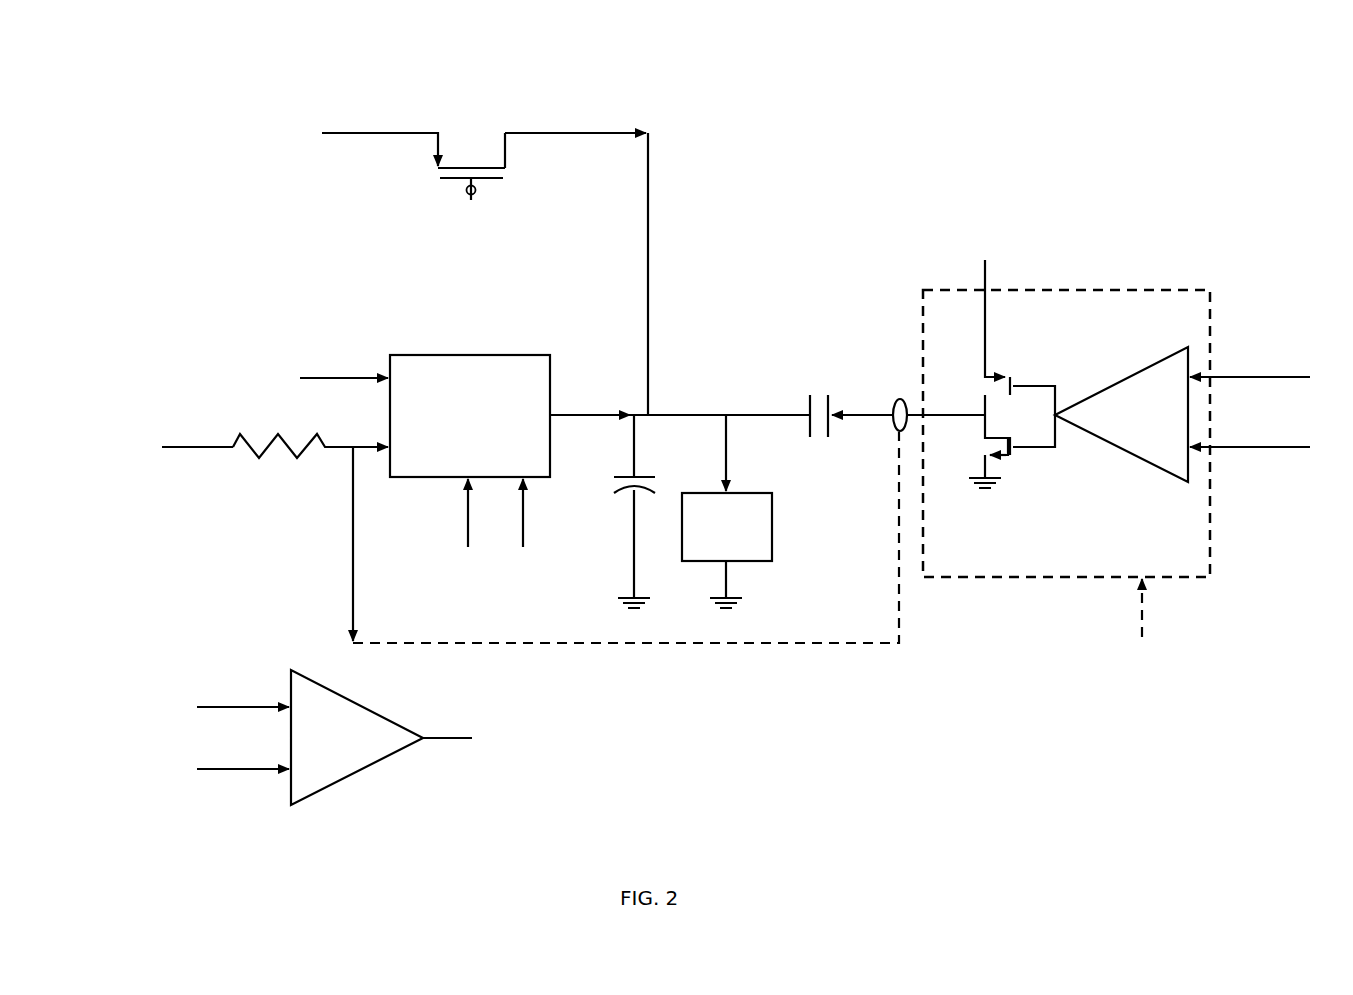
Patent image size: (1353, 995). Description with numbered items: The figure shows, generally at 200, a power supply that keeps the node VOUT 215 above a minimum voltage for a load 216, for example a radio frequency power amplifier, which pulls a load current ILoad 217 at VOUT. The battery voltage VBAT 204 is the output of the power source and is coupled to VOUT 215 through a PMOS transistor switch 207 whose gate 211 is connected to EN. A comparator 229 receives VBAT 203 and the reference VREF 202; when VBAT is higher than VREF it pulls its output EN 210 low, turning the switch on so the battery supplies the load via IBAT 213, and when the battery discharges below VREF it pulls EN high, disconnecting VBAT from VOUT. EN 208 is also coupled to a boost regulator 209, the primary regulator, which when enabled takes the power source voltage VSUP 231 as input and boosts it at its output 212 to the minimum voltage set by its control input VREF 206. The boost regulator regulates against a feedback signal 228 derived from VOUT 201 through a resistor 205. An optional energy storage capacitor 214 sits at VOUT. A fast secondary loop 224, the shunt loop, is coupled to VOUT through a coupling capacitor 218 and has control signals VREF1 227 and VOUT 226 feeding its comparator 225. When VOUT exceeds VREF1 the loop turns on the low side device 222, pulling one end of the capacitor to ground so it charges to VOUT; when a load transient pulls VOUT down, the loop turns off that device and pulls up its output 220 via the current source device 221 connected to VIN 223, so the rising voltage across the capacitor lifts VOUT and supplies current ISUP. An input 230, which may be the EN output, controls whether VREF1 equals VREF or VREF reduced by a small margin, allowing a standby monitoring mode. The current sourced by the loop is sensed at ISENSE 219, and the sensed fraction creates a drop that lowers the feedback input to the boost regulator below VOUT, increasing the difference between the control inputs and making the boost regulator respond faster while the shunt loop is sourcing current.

The power supply 200 is at (1229, 163).
The VOUT feedback input 201 is at (203, 482).
The VREF input to comparator 202 is at (213, 678).
The VBAT input to comparator 203 is at (223, 800).
The VBAT 204 is at (268, 150).
The resistor 205 is at (290, 465).
The VREF input to boost regulator 206 is at (332, 340).
The transistor switch 207 is at (423, 153).
The EN input to boost regulator 208 is at (450, 562).
The boost regulator 209 is at (472, 355).
The EN output of comparator 210 is at (475, 762).
The gate of transistor switch 211 is at (493, 233).
The boost regulator output 212 is at (593, 382).
The IBAT 213 is at (582, 185).
The energy storage capacitor 214 is at (606, 487).
The VOUT node 215 is at (708, 388).
The load 216 is at (773, 533).
The load current ILoad 217 is at (773, 443).
The coupling capacitor 218 is at (818, 385).
The ISENSE current sense 219 is at (862, 503).
The shunt loop output ISUP 220 is at (868, 380).
The current source device 221 is at (985, 388).
The low side device 222 is at (968, 445).
The VIN 223 is at (980, 230).
The secondary loop 224 is at (1088, 278).
The comparator of shunt loop 225 is at (1122, 455).
The VOUT input to shunt loop 226 is at (1262, 478).
The VREF1 227 is at (1258, 342).
The feedback signal 228 is at (358, 490).
The comparator 229 is at (363, 787).
The input to shunt loop 230 is at (1093, 632).
The VSUP 231 is at (507, 588).